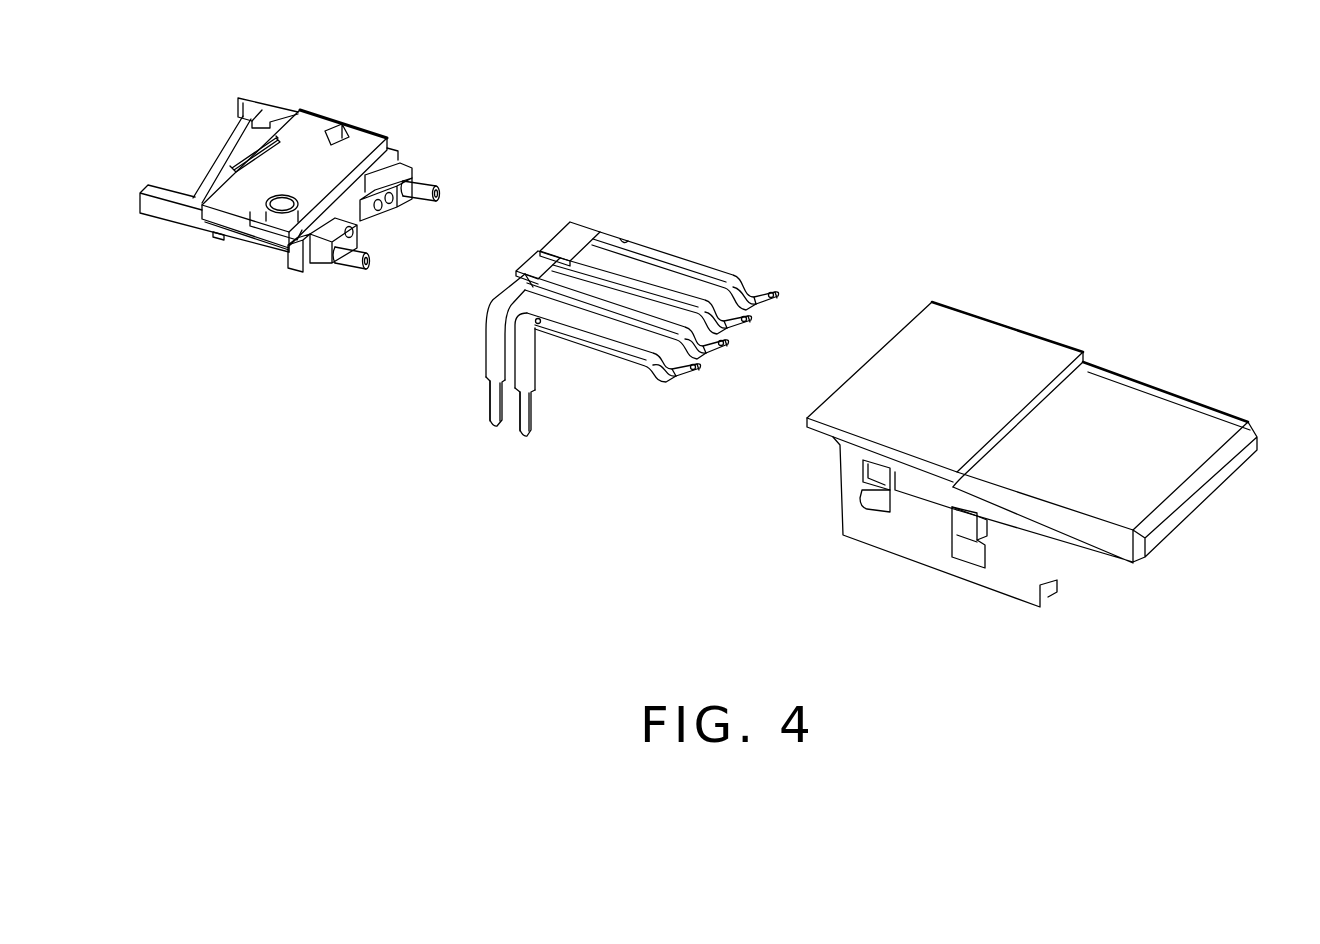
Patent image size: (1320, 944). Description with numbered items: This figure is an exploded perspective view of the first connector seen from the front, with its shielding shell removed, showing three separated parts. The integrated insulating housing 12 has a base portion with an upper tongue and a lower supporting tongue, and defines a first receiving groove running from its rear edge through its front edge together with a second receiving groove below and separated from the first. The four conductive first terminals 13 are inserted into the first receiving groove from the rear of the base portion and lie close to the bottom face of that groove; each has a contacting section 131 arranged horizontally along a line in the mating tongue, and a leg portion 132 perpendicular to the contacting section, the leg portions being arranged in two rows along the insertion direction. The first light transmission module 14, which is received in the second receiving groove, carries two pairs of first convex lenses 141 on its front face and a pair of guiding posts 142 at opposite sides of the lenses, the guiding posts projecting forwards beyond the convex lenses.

The insulating housing 12 is at (1043, 318).
The first terminals 13 is at (591, 329).
The contacting sections 131 is at (620, 342).
The leg portions 132 is at (493, 352).
The first light transmission module 14 is at (319, 200).
The first convex lenses 141 is at (425, 183).
The guiding posts 142 is at (350, 262).